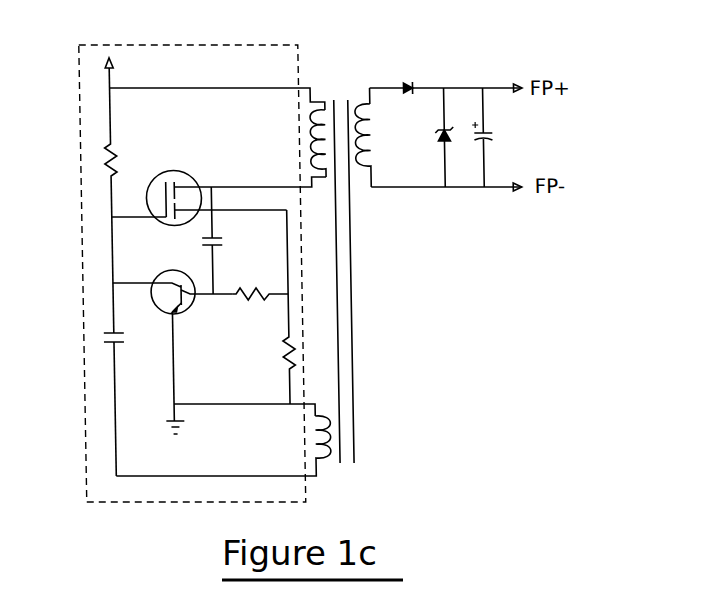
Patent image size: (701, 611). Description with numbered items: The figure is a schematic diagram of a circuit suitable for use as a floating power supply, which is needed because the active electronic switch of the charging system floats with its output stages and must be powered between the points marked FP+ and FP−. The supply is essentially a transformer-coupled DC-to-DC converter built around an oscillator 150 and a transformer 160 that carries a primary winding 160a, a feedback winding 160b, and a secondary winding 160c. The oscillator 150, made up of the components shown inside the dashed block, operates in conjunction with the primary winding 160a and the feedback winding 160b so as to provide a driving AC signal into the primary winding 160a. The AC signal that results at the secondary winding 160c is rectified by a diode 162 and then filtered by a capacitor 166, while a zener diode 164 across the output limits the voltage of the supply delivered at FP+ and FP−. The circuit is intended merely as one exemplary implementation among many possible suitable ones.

The oscillator 150 is at (119, 45).
The transformer 160 is at (343, 100).
The primary winding 160a is at (319, 101).
The feedback winding 160b is at (312, 467).
The secondary winding 160c is at (392, 142).
The diode 162 is at (408, 85).
The zener diode 164 is at (438, 132).
The capacitor 166 is at (485, 133).